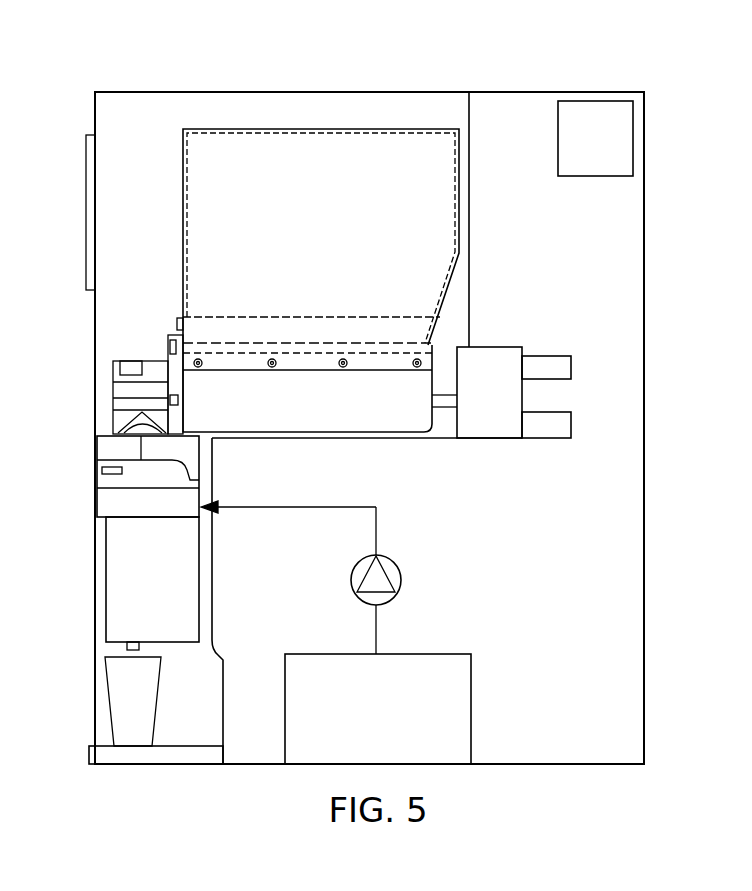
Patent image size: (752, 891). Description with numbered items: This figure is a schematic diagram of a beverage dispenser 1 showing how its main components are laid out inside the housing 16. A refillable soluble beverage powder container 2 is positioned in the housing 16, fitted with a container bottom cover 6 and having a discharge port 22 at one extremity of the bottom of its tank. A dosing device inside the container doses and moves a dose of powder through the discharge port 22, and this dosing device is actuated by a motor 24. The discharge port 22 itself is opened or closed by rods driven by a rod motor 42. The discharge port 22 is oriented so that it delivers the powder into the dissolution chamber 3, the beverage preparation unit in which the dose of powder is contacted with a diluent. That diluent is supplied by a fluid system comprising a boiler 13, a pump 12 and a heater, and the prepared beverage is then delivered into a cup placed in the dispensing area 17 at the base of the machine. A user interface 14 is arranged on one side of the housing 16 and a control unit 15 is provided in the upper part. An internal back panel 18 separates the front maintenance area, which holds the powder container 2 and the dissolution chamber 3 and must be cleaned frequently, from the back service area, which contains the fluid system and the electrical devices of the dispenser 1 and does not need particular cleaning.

The beverage dispenser 1 is at (633, 52).
The container 2 is at (460, 210).
The dissolution chamber 3 is at (119, 573).
The container bottom cover 6 is at (307, 432).
The pump 12 is at (401, 580).
The boiler 13 is at (462, 713).
The user interface 14 is at (86, 215).
The control unit 15 is at (624, 171).
The housing 16 is at (645, 312).
The dispensing area 17 is at (140, 757).
The internal back panel 18 is at (470, 128).
The discharge port 22 is at (113, 403).
The motor of the dosing device 24 is at (547, 438).
The rod motor 42 is at (550, 362).